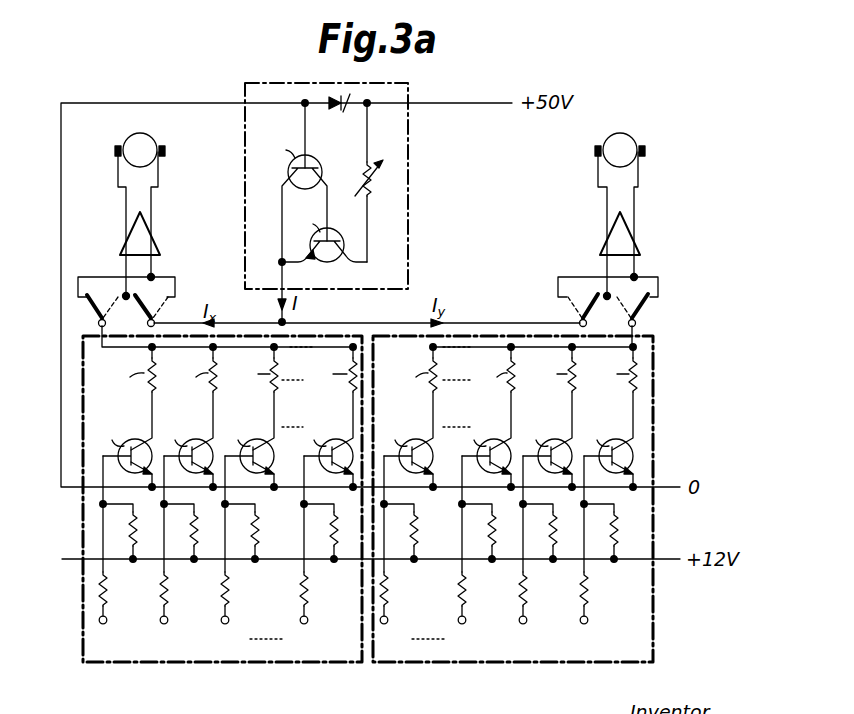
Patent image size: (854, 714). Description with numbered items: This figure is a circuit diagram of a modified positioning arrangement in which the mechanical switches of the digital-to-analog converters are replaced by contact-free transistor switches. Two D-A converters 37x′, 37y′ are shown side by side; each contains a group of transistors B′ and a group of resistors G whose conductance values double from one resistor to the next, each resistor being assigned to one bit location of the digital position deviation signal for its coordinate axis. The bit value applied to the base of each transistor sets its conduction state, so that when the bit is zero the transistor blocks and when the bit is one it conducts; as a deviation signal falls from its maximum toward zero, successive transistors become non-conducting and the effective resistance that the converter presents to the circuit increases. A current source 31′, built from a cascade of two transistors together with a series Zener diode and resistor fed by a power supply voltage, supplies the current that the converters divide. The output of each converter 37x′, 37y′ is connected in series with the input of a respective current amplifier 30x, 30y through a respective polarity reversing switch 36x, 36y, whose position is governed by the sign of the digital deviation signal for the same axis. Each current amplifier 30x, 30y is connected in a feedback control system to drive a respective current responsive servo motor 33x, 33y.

The current responsive servo motor 33x is at (148, 147).
The current amplifier 30x is at (129, 242).
The polarity reversing switch 36x is at (94, 313).
The current source 31′ is at (405, 223).
The current responsive servo motor 33y is at (630, 147).
The current amplifier 30y is at (603, 242).
The polarity reversing switch 36y is at (640, 310).
The D-A converter 37x′ is at (184, 654).
The D-A converter 37y′ is at (483, 654).